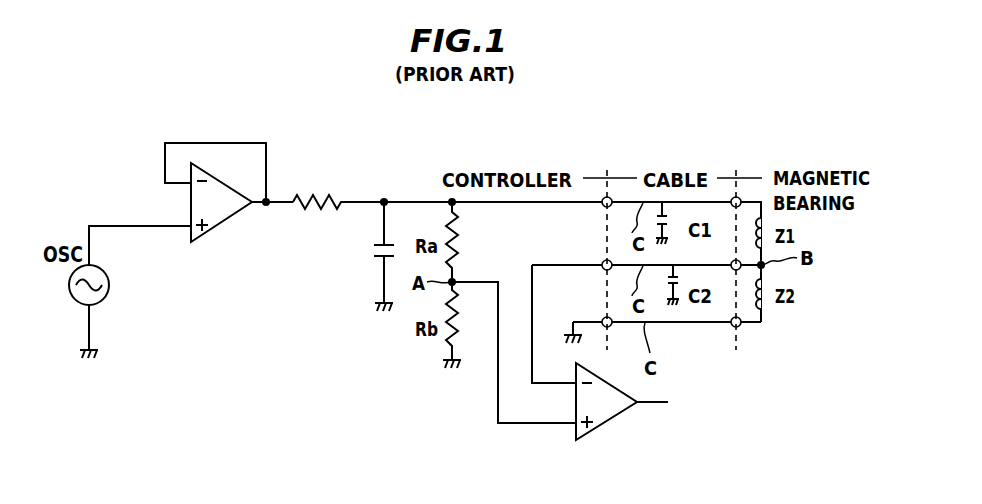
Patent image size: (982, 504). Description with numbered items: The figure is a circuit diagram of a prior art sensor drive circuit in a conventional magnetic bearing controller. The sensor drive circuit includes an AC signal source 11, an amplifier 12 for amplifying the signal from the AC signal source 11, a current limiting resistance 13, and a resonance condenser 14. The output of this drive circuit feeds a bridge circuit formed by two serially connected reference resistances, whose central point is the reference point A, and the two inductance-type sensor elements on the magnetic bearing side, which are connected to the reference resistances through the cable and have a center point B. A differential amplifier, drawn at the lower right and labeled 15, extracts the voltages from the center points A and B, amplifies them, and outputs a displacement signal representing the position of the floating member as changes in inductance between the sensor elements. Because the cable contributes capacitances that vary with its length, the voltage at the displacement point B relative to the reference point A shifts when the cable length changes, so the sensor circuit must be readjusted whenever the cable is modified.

The AC signal source 11 is at (109, 285).
The amplifier 12 is at (218, 226).
The current limiting resistance 13 is at (316, 198).
The resonance condenser 14 is at (374, 257).
The operational amplifier 15 is at (608, 422).